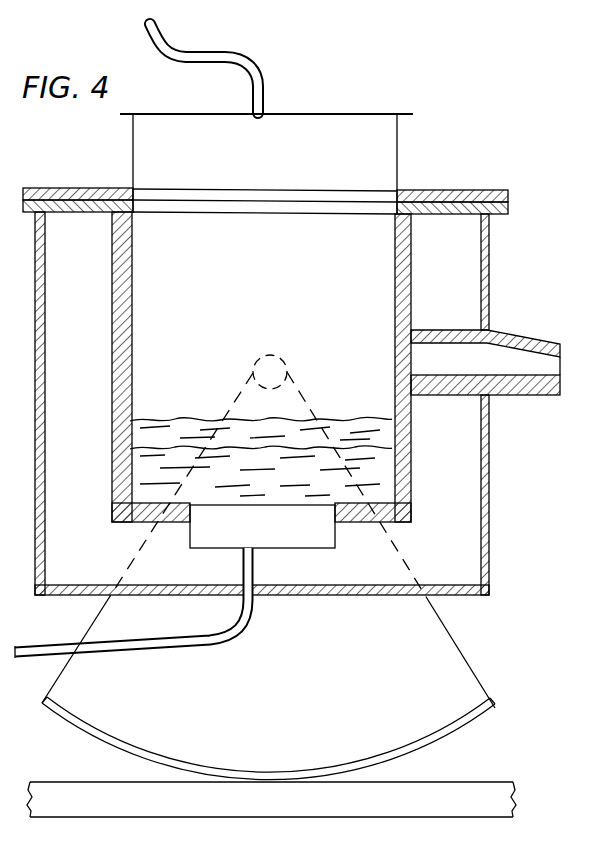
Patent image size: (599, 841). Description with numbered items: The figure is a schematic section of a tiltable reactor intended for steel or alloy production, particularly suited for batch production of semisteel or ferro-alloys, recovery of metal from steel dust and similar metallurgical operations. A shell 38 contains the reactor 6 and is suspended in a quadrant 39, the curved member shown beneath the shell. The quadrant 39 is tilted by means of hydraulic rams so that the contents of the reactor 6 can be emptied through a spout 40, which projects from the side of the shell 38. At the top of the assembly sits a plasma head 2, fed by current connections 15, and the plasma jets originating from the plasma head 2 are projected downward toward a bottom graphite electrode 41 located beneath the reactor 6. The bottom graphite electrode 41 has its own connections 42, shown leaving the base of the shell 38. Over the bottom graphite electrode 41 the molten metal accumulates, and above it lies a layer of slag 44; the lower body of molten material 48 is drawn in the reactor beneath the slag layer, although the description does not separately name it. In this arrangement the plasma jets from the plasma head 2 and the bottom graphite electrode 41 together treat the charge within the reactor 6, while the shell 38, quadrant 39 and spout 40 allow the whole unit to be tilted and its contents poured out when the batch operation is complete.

The plasma head 2 is at (378, 161).
The reactor 6 is at (410, 275).
The current connections 15 is at (223, 60).
The shell 38 is at (488, 492).
The quadrant 39 is at (445, 650).
The spout 40 is at (517, 331).
The bottom graphite electrode 41 is at (305, 549).
The connections 42 is at (145, 650).
The layer of slag 44 is at (385, 436).
The liquid bath 48 is at (383, 481).